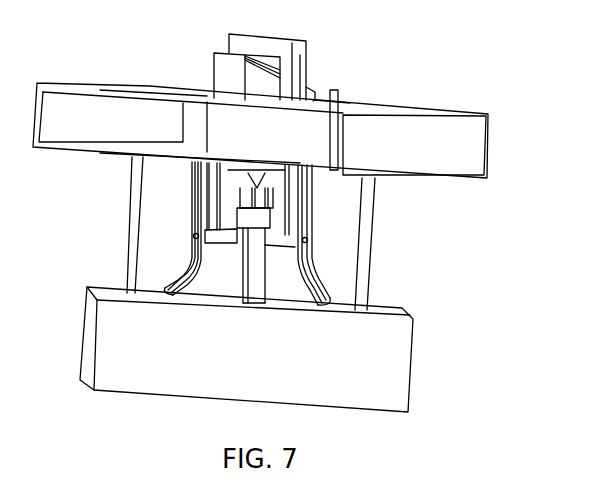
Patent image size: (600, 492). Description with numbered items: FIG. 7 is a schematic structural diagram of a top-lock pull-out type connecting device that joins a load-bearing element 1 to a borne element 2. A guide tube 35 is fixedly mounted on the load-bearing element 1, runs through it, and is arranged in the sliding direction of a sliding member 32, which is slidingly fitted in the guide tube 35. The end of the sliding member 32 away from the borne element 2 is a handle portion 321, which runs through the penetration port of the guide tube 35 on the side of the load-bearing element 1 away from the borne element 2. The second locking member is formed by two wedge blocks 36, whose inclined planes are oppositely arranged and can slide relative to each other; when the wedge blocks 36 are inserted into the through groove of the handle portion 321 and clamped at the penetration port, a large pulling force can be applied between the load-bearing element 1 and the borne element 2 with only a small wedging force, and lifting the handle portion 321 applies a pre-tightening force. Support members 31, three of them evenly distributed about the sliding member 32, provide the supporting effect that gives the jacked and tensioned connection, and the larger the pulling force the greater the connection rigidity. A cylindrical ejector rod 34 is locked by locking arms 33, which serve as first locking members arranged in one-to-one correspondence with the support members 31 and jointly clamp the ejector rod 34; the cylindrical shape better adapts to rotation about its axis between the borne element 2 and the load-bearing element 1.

The load-bearing element 1 is at (380, 107).
The borne element 2 is at (383, 332).
The support member 31 is at (350, 247).
The sliding member 32 is at (197, 182).
The locking arm 33 is at (278, 222).
The ejector rod 34 is at (250, 270).
The guide tube 35 is at (217, 127).
The wedge block 36 is at (233, 73).
The handle portion 321 is at (265, 47).